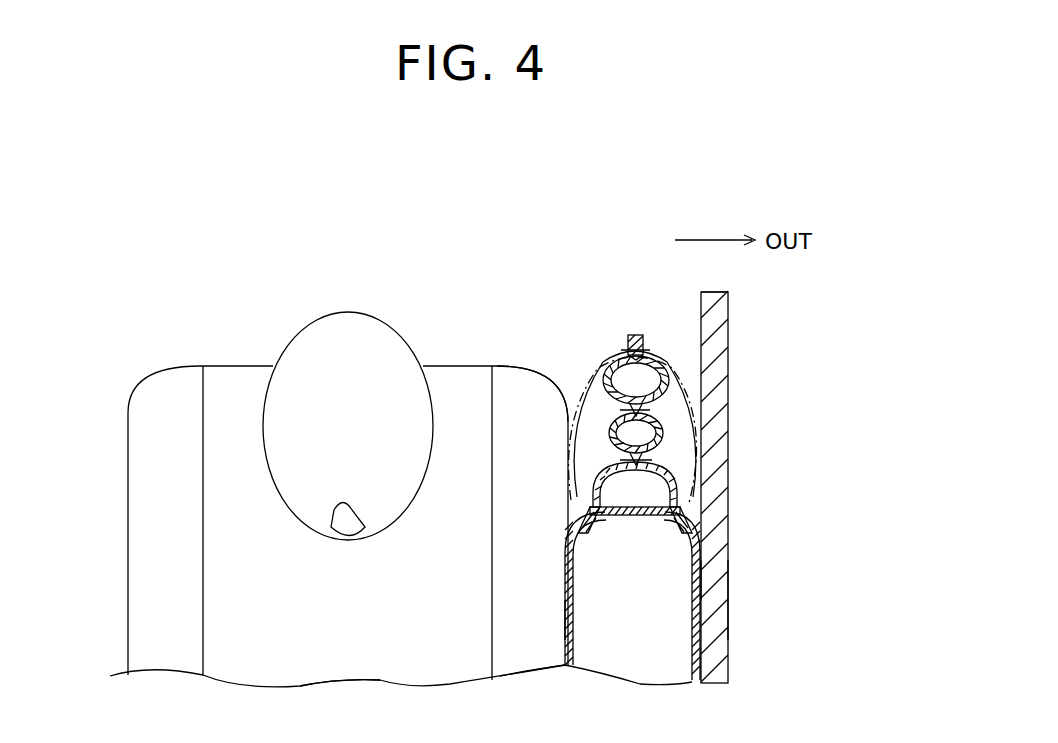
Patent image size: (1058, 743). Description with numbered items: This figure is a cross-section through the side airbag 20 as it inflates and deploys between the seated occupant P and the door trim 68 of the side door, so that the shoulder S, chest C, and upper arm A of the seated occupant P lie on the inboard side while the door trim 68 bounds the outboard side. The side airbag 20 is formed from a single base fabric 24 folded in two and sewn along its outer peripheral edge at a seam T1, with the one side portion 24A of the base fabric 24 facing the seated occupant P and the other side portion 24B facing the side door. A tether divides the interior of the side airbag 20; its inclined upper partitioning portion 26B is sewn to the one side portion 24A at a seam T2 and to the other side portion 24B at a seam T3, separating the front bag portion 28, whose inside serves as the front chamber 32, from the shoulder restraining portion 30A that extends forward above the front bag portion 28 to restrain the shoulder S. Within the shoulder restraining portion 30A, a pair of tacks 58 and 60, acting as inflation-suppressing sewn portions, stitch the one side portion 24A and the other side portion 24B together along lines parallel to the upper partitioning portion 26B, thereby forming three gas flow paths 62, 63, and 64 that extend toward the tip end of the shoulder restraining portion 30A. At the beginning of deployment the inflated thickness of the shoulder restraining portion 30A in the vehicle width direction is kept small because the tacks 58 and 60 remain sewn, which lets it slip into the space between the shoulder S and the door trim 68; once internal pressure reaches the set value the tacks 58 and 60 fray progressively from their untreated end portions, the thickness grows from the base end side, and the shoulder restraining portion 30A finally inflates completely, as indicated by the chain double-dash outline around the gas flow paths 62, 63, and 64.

The side airbag 20 is at (552, 588).
The base fabric 24 is at (728, 655).
The one side portion 24A is at (567, 617).
The other side portion 24B is at (728, 611).
The upper partitioning portion 26B is at (630, 507).
The front bag portion 28 is at (703, 577).
The shoulder restraining portion 30A is at (578, 368).
The front chamber 32 is at (650, 658).
The tack 58 is at (600, 462).
The tack 60 is at (620, 409).
The gas flow path 62 is at (643, 488).
The gas flow path 63 is at (631, 435).
The gas flow path 64 is at (641, 375).
The door trim 68 is at (700, 318).
The seated occupant P is at (320, 300).
The shoulder S is at (530, 372).
The chest C is at (347, 580).
The upper arm A is at (528, 645).
The seam T1 is at (617, 333).
The seam T2 is at (578, 520).
The seam T3 is at (688, 515).